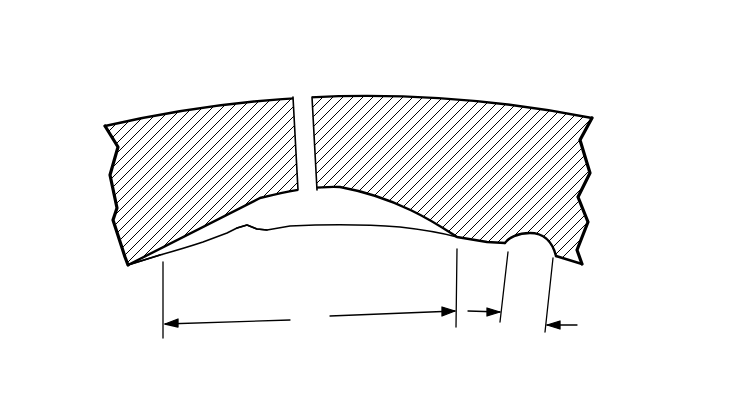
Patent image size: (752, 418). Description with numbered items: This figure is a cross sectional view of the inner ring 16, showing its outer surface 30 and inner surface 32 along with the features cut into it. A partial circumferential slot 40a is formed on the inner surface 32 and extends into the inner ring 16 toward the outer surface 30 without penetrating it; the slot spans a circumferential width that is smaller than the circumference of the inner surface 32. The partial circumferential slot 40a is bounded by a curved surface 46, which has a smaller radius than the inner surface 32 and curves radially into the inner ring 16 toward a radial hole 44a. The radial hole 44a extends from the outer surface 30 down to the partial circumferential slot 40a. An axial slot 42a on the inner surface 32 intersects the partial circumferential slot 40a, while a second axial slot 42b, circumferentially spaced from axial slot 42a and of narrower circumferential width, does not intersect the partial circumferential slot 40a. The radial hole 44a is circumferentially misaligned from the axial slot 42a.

The inner ring 16 is at (92, 90).
The outer surface 30 is at (483, 97).
The radial hole 44a is at (303, 103).
The axial slot 42b is at (538, 233).
The partial circumferential slot 40a is at (357, 212).
The curved surface 46 is at (283, 195).
The axial slot 42a is at (247, 228).
The inner surface 32 is at (145, 265).